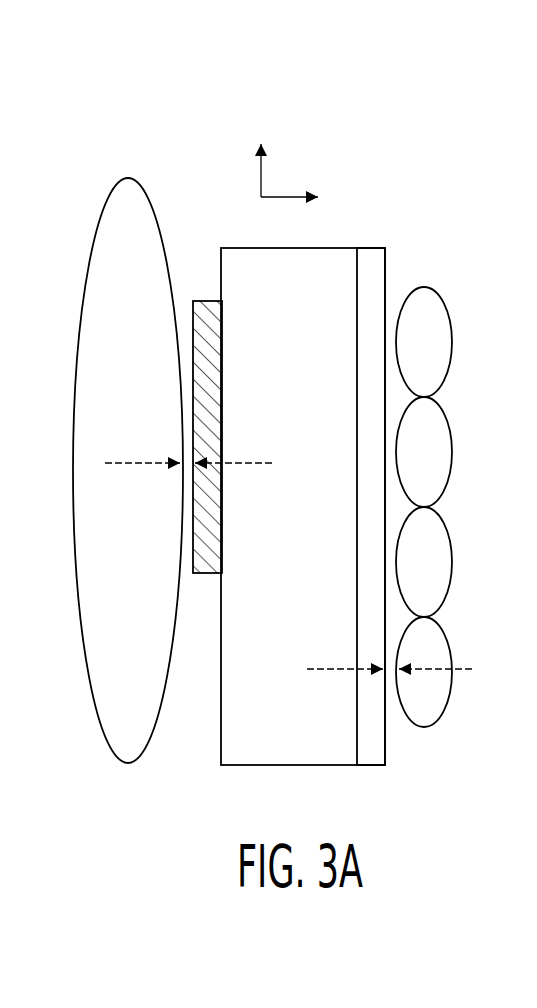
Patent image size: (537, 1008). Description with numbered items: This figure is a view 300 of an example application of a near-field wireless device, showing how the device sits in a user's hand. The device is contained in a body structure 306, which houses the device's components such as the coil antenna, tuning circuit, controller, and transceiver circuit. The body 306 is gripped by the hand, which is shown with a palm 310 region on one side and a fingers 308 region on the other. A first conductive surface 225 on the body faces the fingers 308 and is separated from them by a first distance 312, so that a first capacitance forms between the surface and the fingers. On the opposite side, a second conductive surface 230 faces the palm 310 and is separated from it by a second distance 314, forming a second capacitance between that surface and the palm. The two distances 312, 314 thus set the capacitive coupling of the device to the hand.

The view 300 is at (103, 111).
The palm region 310 is at (73, 398).
The second conductive surface 230 is at (204, 300).
The body structure 306 is at (250, 766).
The first conductive surface 225 is at (385, 248).
The fingers region 308 is at (467, 276).
The first distance 312 is at (318, 667).
The second distance 314 is at (128, 461).